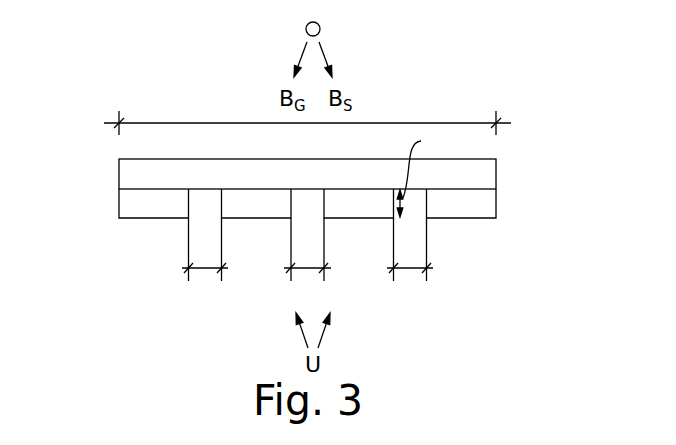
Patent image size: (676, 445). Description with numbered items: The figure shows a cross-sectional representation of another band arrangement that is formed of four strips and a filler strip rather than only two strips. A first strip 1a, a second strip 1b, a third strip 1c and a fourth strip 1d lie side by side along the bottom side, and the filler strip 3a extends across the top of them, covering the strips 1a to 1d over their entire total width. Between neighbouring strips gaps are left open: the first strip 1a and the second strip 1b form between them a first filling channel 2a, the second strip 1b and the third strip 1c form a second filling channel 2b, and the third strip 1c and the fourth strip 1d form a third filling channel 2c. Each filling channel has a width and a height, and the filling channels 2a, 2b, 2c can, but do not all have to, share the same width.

The first strip 1a is at (128, 204).
The second strip 1b is at (287, 218).
The third strip 1c is at (392, 218).
The fourth strip 1d is at (488, 204).
The first filling channel 2a is at (202, 203).
The second filling channel 2b is at (303, 203).
The third filling channel 2c is at (415, 205).
The filler strip 3a is at (488, 172).